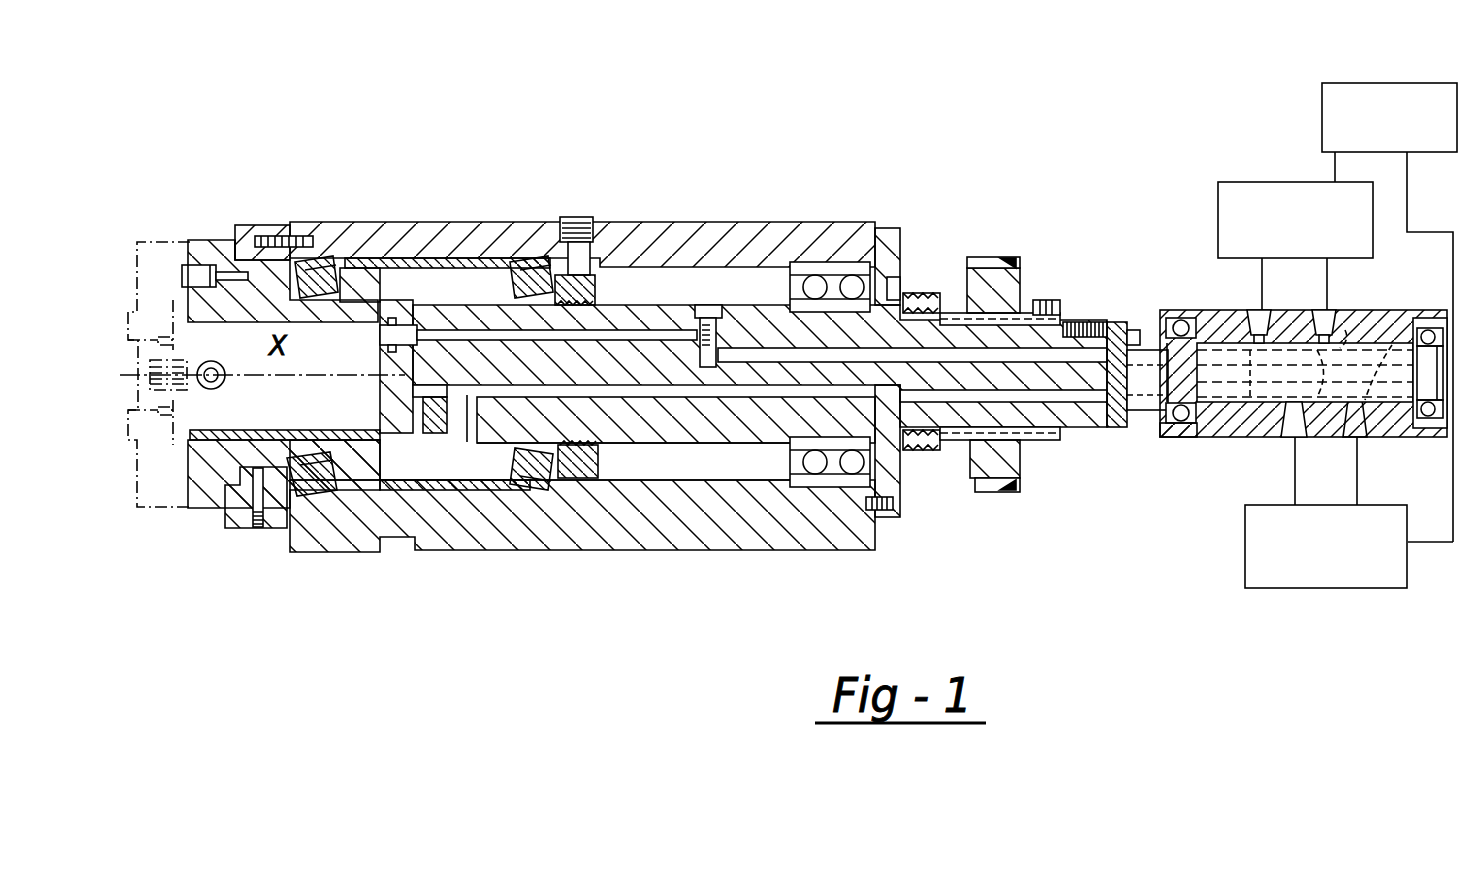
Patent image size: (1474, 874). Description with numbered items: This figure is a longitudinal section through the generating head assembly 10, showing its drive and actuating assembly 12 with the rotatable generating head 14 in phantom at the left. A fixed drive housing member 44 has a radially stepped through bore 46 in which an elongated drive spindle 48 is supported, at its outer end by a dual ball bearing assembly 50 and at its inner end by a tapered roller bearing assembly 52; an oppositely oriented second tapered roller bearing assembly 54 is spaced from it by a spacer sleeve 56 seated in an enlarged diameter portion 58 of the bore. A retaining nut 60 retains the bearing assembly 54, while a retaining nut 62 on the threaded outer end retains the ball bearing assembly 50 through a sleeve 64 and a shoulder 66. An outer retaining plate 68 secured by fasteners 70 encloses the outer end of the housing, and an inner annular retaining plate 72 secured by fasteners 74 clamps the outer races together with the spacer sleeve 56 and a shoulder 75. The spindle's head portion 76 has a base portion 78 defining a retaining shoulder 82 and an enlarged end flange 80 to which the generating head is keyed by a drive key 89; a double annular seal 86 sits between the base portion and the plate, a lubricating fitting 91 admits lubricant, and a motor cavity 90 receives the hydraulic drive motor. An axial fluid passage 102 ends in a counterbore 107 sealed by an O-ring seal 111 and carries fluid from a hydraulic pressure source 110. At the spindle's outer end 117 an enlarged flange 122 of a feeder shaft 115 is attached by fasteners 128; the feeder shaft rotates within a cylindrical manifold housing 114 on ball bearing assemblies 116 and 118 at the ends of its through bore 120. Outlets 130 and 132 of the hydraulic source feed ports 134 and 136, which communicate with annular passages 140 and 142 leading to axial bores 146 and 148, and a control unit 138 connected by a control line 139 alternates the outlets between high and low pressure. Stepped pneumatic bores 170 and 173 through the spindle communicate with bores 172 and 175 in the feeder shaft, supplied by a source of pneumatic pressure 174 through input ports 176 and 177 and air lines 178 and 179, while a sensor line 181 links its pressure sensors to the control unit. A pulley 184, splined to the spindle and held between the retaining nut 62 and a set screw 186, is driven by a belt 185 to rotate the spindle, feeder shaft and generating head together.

The generating head assembly 10 is at (484, 624).
The drive and actuating assembly 12 is at (838, 166).
The generating head 14 is at (150, 532).
The drive housing member 44 is at (680, 535).
The through bore 46 is at (645, 332).
The drive spindle 48 is at (408, 305).
The dual ball bearing assembly 50 is at (840, 290).
The tapered roller bearing assembly 52 is at (315, 262).
The second tapered roller bearing assembly 54 is at (525, 262).
The spacer sleeve 56 is at (360, 270).
The enlarged diameter portion 58 is at (465, 480).
The retaining nut 60 is at (600, 461).
The retaining nut 62 is at (925, 298).
The sleeve 64 is at (890, 275).
The shoulder 66 is at (803, 320).
The outer retaining plate 68 is at (900, 475).
The fasteners 70 is at (890, 512).
The inner retaining plate 72 is at (240, 520).
The fasteners 74 is at (255, 225).
The shoulder 75 is at (545, 488).
The head portion 76 is at (242, 322).
The base portion 78 is at (268, 455).
The end flange 80 is at (230, 240).
The retaining shoulder 82 is at (315, 450).
The double annular seal 86 is at (280, 236).
The drive key 89 is at (200, 265).
The motor cavity 90 is at (362, 330).
The lubricating fitting 91 is at (262, 527).
The fluid passage 102 is at (645, 332).
The counterbore 107 is at (417, 335).
The hydraulic pressure source 110 is at (1260, 182).
The O-ring seal 111 is at (395, 262).
The manifold housing 114 is at (1198, 440).
The feeder shaft 115 is at (1365, 355).
The ball bearing assembly 116 is at (1430, 318).
The outer end 117 is at (1082, 322).
The ball bearing assembly 118 is at (1172, 313).
The through bore 120 is at (405, 345).
The enlarged flange 122 is at (1117, 430).
The fasteners 128 is at (1130, 330).
The outlet 130 is at (1258, 272).
The outlet 132 is at (1325, 277).
The port 134 is at (1255, 310).
The port 136 is at (1328, 304).
The control unit 138 is at (1357, 83).
The control line 139 is at (1336, 168).
The annular passage 140 is at (1237, 368).
The annular passage 142 is at (1340, 330).
The bore 146 is at (1135, 360).
The bore 148 is at (1314, 373).
The pneumatic bore 170 is at (208, 440).
The bore 172 is at (1200, 438).
The pneumatic bore 173 is at (455, 452).
The source of pneumatic pressure 174 is at (1302, 588).
The bore 175 is at (1393, 370).
The input port 176 is at (1290, 450).
The input port 177 is at (1313, 436).
The air line 178 is at (1300, 479).
The air line 179 is at (1360, 495).
The sensor line 181 is at (1408, 215).
The pulley 184 is at (990, 262).
The belt 185 is at (997, 485).
The set screw 186 is at (1040, 300).